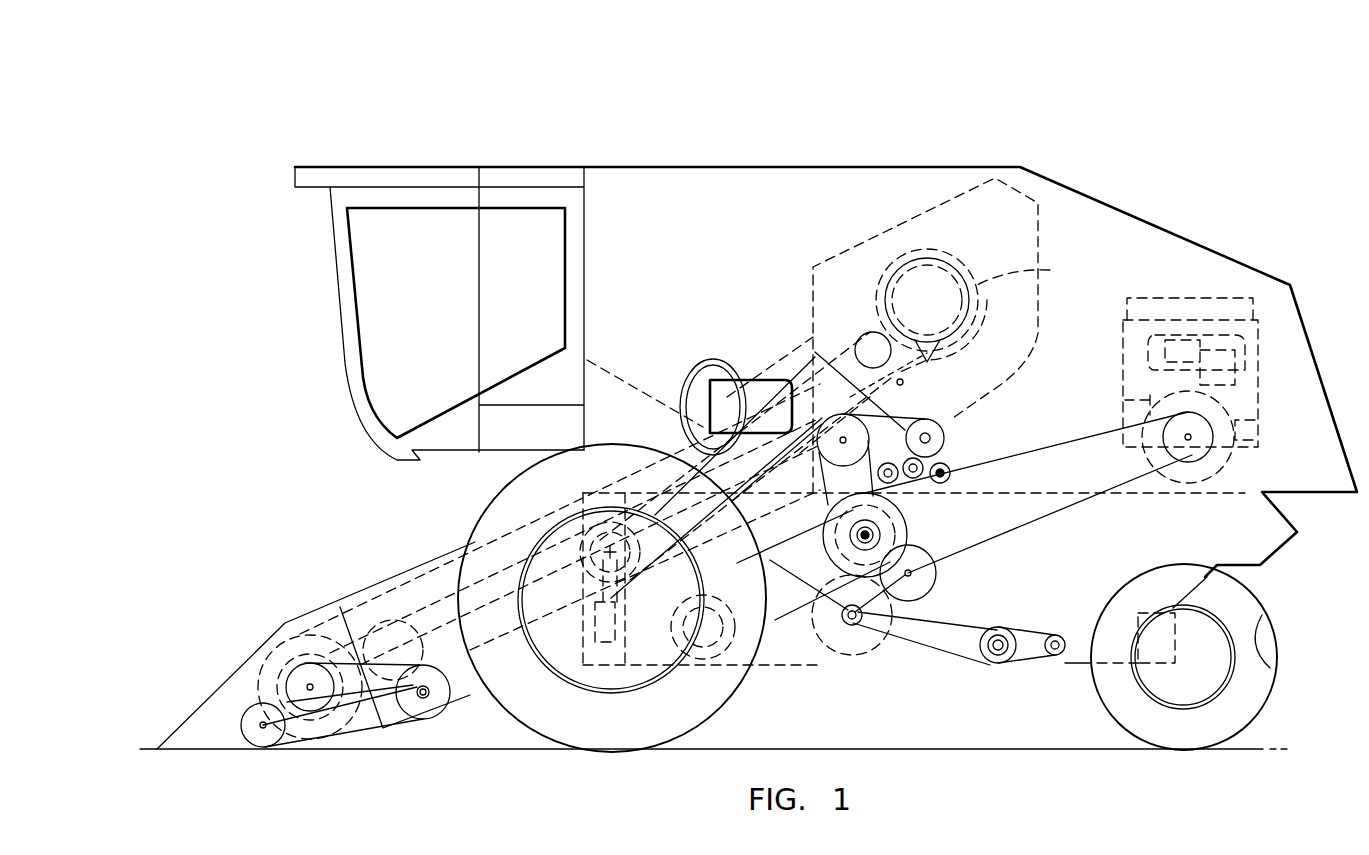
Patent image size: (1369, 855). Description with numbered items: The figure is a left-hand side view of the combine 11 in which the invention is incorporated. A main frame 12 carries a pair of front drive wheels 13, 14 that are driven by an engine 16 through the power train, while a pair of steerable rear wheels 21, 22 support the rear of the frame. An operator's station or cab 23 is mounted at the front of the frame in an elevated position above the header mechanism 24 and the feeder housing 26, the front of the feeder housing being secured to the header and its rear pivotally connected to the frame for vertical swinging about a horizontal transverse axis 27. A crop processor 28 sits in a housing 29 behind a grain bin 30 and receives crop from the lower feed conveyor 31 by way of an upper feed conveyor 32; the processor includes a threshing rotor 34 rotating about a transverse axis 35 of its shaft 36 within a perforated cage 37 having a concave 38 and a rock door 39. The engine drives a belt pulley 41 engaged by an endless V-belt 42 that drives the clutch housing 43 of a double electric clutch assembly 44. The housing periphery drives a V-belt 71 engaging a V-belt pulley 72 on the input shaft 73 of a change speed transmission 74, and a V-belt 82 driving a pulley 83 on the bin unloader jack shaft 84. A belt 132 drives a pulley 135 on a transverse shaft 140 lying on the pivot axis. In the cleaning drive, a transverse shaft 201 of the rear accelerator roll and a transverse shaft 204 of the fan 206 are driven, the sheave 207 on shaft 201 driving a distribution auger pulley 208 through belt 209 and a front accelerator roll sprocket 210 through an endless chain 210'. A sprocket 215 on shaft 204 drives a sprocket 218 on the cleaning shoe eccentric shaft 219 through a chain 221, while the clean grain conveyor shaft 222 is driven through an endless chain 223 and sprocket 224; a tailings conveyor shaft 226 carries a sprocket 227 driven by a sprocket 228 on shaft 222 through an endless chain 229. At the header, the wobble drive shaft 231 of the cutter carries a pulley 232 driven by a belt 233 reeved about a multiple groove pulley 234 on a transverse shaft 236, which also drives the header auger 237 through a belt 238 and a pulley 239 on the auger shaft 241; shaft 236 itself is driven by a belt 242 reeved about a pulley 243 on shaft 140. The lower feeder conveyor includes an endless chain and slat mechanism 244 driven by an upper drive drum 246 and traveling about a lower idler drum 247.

The combine 11 is at (397, 502).
The main frame 12 is at (940, 653).
The drive wheel 13 is at (755, 647).
The drive wheel 14 is at (720, 707).
The engine 16 is at (1258, 380).
The steerable rear wheel 21 is at (1235, 710).
The steerable rear wheel 22 is at (1263, 652).
The operator's station or cab 23 is at (353, 366).
The header mechanism 24 is at (243, 667).
The feeder housing 26 is at (417, 580).
The horizontal transverse axis 27 is at (590, 574).
The crop processor 28 is at (1080, 282).
The housing 29 is at (1040, 230).
The grain bin 30 is at (743, 177).
The lower feed conveyor 31 is at (437, 600).
The upper feed conveyor 32 is at (840, 340).
The threshing rotor 34 is at (983, 293).
The transverse axis 35 is at (932, 303).
The rotor shaft 36 is at (955, 278).
The perforated cage 37 is at (940, 250).
The concave 38 is at (985, 318).
The rock door 39 is at (950, 368).
The belt pulley 41 is at (1178, 445).
The endless V-belt 42 is at (1110, 432).
The clutch housing 43 is at (908, 536).
The double electric clutch assembly 44 is at (826, 573).
The endless V-belt 71 is at (770, 548).
The V-belt pulley 72 is at (720, 607).
The input shaft 73 is at (685, 647).
The change speed transmission 74 is at (692, 675).
The endless V-belt 82 is at (915, 432).
The pulley 83 is at (905, 387).
The bin unloader jack shaft 84 is at (843, 443).
The belt 132 is at (770, 520).
The pulley 135 is at (700, 485).
The transverse shaft 140 is at (628, 495).
The transverse shaft 201 is at (947, 457).
The transverse shaft 204 is at (823, 592).
The fan 206 is at (857, 662).
The sheave 207 is at (950, 480).
The distribution auger pulley 208 is at (937, 420).
The belt 209 is at (950, 437).
The front accelerator roll sprocket 210 is at (914, 507).
The endless chain 210' is at (972, 503).
The sprocket 215 is at (858, 630).
The sprocket 218 is at (920, 585).
The cleaning shoe eccentric shaft 219 is at (943, 553).
The chain 221 is at (915, 613).
The clean grain conveyor shaft 222 is at (1007, 637).
The endless chain 223 is at (977, 618).
The sprocket 224 is at (993, 638).
The tailings conveyor shaft 226 is at (1063, 640).
The sprocket 227 is at (1065, 657).
The sprocket 228 is at (993, 657).
The endless chain 229 is at (1033, 653).
The wobble drive shaft 231 is at (255, 730).
The pulley 232 is at (263, 733).
The belt 233 is at (297, 733).
The multiple groove pulley 234 is at (445, 717).
The transverse shaft 236 is at (400, 727).
The header auger 237 is at (266, 638).
The belt 238 is at (330, 730).
The pulley 239 is at (290, 688).
The auger shaft 241 is at (312, 680).
The belt 242 is at (450, 700).
The pulley 243 is at (587, 503).
The endless chain and slat mechanism 244 is at (503, 545).
The upper drive drum 246 is at (553, 527).
The lower idler drum 247 is at (387, 583).